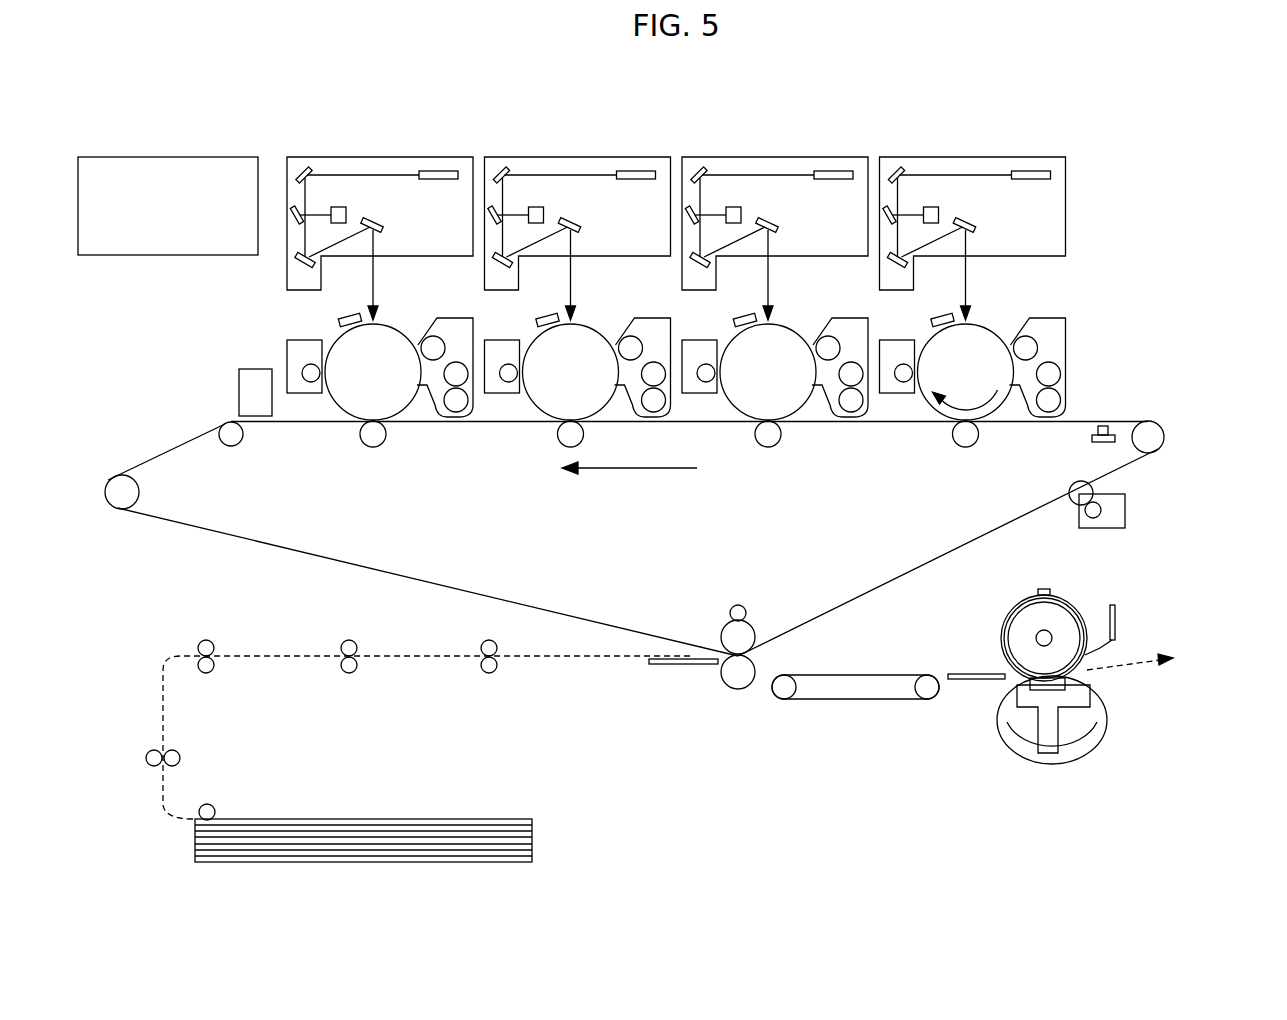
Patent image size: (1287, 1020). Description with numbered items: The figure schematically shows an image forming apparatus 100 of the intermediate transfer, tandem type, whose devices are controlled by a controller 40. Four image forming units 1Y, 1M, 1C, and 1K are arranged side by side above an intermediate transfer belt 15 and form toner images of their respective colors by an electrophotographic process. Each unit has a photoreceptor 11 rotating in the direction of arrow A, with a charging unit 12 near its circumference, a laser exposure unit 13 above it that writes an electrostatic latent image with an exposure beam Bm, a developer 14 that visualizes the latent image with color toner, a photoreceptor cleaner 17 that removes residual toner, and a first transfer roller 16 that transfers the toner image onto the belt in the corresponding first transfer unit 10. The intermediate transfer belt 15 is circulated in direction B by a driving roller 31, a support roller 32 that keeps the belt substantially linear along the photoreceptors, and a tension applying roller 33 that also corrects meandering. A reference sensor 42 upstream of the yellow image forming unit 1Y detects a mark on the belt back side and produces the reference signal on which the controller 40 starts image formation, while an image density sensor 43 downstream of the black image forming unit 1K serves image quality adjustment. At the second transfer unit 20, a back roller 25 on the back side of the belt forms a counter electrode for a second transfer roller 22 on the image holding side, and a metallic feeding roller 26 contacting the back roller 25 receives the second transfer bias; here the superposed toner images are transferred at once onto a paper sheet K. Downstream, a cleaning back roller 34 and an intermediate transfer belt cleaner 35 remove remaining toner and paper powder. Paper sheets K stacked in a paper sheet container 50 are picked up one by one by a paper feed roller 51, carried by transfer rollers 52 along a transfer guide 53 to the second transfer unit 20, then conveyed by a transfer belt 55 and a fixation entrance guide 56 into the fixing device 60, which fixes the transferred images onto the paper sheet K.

The image forming apparatus 100 is at (1142, 161).
The controller 40 is at (170, 156).
The black image forming unit 1K is at (373, 139).
The image forming unit 1C is at (570, 139).
The image forming unit 1M is at (768, 139).
The yellow image forming unit 1Y is at (1005, 285).
The laser exposure unit 13 is at (1004, 223).
The exposure beam Bm is at (999, 275).
The charging unit 12 is at (917, 313).
The photoreceptor 11 is at (996, 350).
The rotation direction of photoreceptor A is at (965, 390).
The photoreceptor cleaner 17 is at (896, 403).
The developer 14 is at (1071, 367).
The first transfer roller 16 is at (969, 462).
The first transfer unit 10 is at (936, 436).
The intermediate transfer belt 15 is at (536, 604).
The circulation direction of intermediate transfer belt B is at (629, 480).
The tension applying roller 33 is at (134, 497).
The support roller 32 is at (233, 443).
The driving roller 31 is at (1163, 437).
The reference sensor 42 is at (1105, 444).
The cleaning back roller 34 is at (1072, 489).
The intermediate transfer belt cleaner 35 is at (1125, 509).
The image density sensor 43 is at (245, 385).
The feeding roller 26 is at (738, 605).
The back roller 25 is at (748, 631).
The second transfer roller 22 is at (738, 690).
The second transfer unit 20 is at (760, 657).
The transfer guide 53 is at (662, 666).
The transfer belt 55 is at (855, 700).
The fixation entrance guide 56 is at (965, 682).
The fixing device 60 is at (1129, 612).
The transfer rollers 52 is at (200, 652).
The paper feed roller 51 is at (207, 806).
The paper sheet container 50 is at (533, 841).
The paper sheet K is at (370, 819).